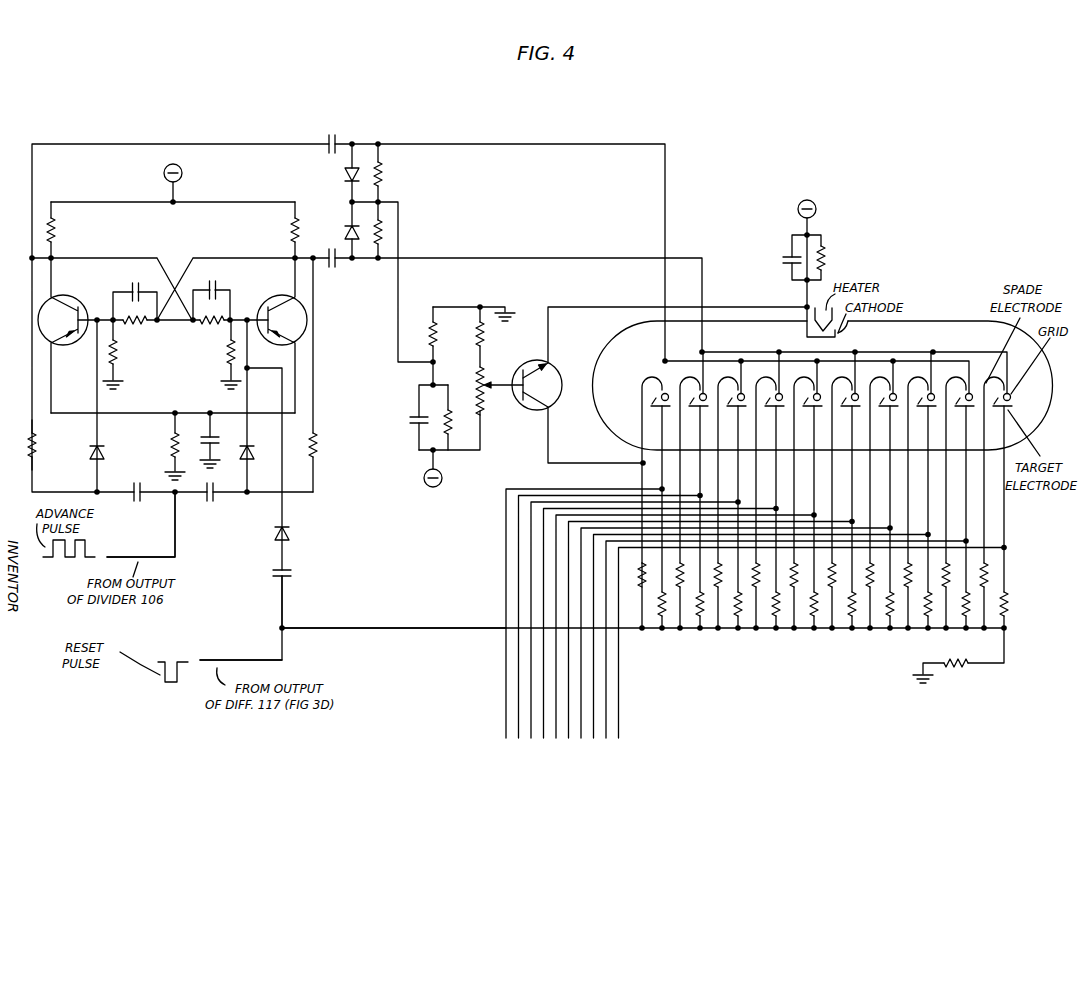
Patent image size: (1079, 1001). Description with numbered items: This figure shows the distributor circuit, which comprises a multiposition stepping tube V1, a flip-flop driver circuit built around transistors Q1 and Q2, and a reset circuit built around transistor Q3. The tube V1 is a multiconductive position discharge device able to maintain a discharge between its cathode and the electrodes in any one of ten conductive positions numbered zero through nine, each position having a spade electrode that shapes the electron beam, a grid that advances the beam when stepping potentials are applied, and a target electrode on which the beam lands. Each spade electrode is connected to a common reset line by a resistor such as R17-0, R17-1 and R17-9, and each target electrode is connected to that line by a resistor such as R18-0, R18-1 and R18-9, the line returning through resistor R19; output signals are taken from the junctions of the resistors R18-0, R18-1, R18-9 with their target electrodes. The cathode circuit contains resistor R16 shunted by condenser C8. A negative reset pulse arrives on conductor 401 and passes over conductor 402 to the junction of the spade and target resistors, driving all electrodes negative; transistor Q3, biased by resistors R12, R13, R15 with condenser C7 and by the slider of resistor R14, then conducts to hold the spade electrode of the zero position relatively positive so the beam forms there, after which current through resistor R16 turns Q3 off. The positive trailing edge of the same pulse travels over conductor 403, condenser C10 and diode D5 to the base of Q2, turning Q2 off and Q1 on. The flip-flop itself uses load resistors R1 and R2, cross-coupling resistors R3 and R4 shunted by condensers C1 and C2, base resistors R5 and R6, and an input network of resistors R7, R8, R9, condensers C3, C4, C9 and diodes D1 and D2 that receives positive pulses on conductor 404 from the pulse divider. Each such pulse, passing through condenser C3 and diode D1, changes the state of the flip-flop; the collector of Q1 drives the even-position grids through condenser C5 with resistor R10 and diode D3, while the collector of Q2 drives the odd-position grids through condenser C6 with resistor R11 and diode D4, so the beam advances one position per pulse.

The resistor R1 is at (62, 230).
The resistor R2 is at (282, 230).
The resistor R3 is at (135, 332).
The resistor R4 is at (211, 332).
The resistor R5 is at (122, 354).
The resistor R6 is at (222, 354).
The resistor R7 is at (44, 445).
The resistor R8 is at (163, 446).
The resistor R9 is at (325, 375).
The resistor R10 is at (395, 173).
The resistor R11 is at (384, 230).
The resistor R12 is at (428, 322).
The resistor R13 is at (487, 341).
The adjustable resistor R14 is at (488, 396).
The resistor R15 is at (440, 428).
The resistor R16 is at (831, 257).
The resistor R17-0 is at (640, 584).
The resistor R17-1 is at (683, 588).
The resistor R17-9 is at (990, 584).
The resistor R18-0 is at (668, 614).
The resistor R18-1 is at (700, 615).
The resistor R18-9 is at (1036, 600).
The resistor R19 is at (966, 669).
The condenser C1 is at (135, 285).
The condenser C2 is at (211, 284).
The condenser C3 is at (143, 472).
The condenser C4 is at (213, 441).
The condenser C5 is at (329, 135).
The condenser C6 is at (330, 266).
The condenser C7 is at (418, 417).
The condenser C8 is at (789, 262).
The condenser C9 is at (208, 500).
The condenser C10 is at (298, 575).
The diode D1 is at (90, 453).
The diode D2 is at (254, 455).
The diode D3 is at (340, 173).
The diode D4 is at (340, 230).
The diode D5 is at (292, 535).
The transistor Q1 is at (79, 296).
The transistor Q2 is at (307, 320).
The transistor Q3 is at (549, 398).
The multiposition stepping tube V1 is at (823, 431).
The conductor 401 is at (257, 658).
The conductor 402 is at (445, 626).
The conductor 403 is at (285, 598).
The conductor 404 is at (153, 556).